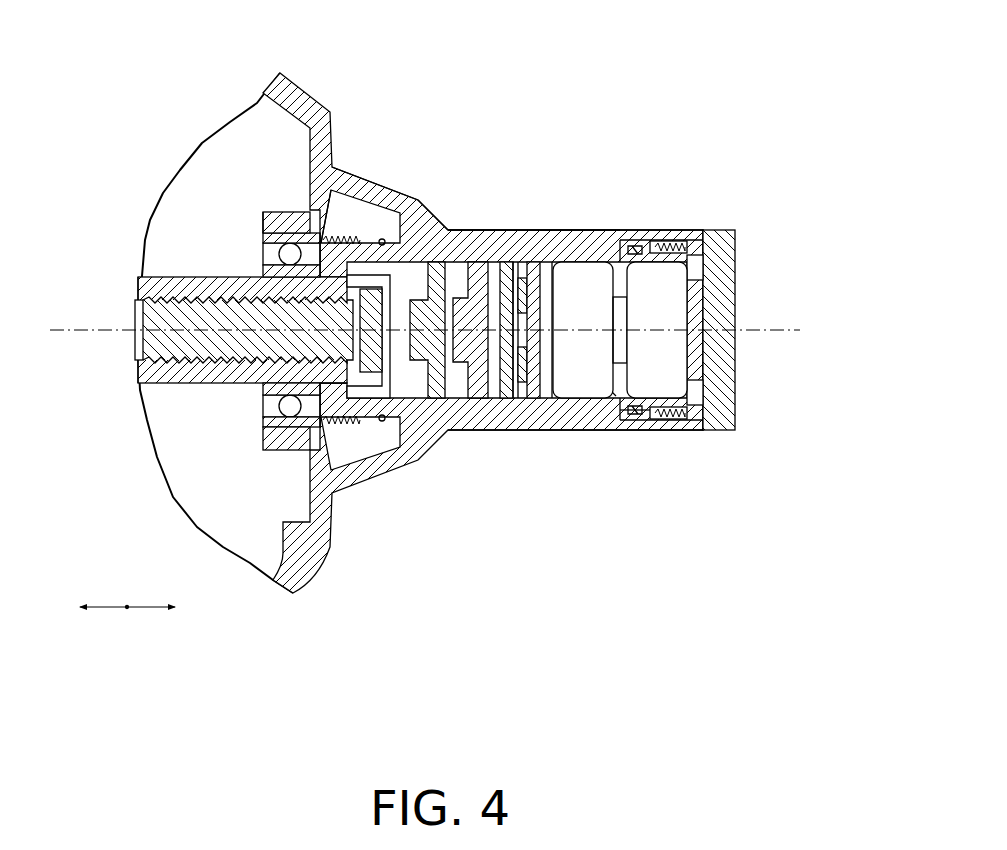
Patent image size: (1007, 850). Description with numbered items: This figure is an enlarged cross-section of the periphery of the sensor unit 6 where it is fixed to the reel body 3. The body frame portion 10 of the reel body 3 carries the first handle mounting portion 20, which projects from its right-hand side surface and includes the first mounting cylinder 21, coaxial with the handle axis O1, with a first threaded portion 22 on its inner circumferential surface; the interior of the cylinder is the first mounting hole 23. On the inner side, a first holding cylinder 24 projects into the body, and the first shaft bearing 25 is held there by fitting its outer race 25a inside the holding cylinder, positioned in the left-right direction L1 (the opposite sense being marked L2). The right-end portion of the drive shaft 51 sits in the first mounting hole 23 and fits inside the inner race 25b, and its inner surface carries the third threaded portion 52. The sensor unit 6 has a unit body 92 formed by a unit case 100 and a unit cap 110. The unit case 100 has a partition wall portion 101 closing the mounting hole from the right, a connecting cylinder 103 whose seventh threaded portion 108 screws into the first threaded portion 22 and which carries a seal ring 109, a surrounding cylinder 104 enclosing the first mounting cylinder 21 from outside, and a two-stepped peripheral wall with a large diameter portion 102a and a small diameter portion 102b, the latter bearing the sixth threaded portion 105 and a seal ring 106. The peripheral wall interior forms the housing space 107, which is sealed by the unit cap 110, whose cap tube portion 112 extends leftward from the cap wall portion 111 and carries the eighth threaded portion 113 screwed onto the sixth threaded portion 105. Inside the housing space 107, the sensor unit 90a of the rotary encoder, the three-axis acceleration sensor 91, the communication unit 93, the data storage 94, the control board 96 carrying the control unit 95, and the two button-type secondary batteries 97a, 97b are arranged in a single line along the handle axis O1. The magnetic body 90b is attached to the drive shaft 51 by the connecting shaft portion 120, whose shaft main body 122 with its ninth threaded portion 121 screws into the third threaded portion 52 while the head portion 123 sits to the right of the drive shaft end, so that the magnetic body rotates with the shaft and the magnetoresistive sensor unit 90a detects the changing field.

The reel body 3 is at (298, 84).
The sensor unit 6 is at (694, 124).
The body frame portion 10 is at (307, 100).
The first handle mounting portion 20 is at (366, 212).
The first mounting cylinder 21 is at (384, 220).
The first threaded portion 22 is at (336, 238).
The first mounting hole 23 is at (430, 228).
The first holding cylinder 24 is at (300, 226).
The first shaft bearing 25 is at (265, 254).
The outer race 25a is at (260, 238).
The inner race 25b is at (262, 270).
The drive shaft 51 is at (172, 278).
The third threaded portion 52 is at (140, 318).
The sensor unit 90a is at (476, 400).
The magnetic body 90b is at (436, 400).
The three-axis acceleration sensor 91 is at (505, 400).
The unit body 92 is at (646, 112).
The communication unit 93 is at (516, 400).
The data storage 94 is at (523, 384).
The control unit 95 is at (533, 300).
The control board 96 is at (620, 398).
The secondary battery 97a is at (580, 390).
The secondary battery 97b is at (680, 373).
The unit case 100 is at (578, 228).
The partition wall portion 101 is at (394, 395).
The large diameter portion 102a is at (492, 230).
The small diameter portion 102b is at (680, 258).
The connecting cylinder 103 is at (300, 400).
The surrounding cylinder 104 is at (344, 236).
The sixth threaded portion 105 is at (684, 250).
The seal ring 106 is at (636, 412).
The housing space 107 is at (614, 399).
The seventh threaded portion 108 is at (305, 232).
The seal ring 109 is at (370, 390).
The unit cap 110 is at (630, 232).
The cap wall portion 111 is at (736, 355).
The cap tube portion 112 is at (690, 428).
The eighth threaded portion 113 is at (697, 266).
The connecting shaft portion 120 is at (206, 352).
The ninth threaded portion 121 is at (155, 290).
The shaft main body 122 is at (145, 346).
The head portion 123 is at (322, 430).
The handle axis O1 is at (800, 330).
The left-right direction L1 is at (108, 609).
The direction L2 is at (130, 609).